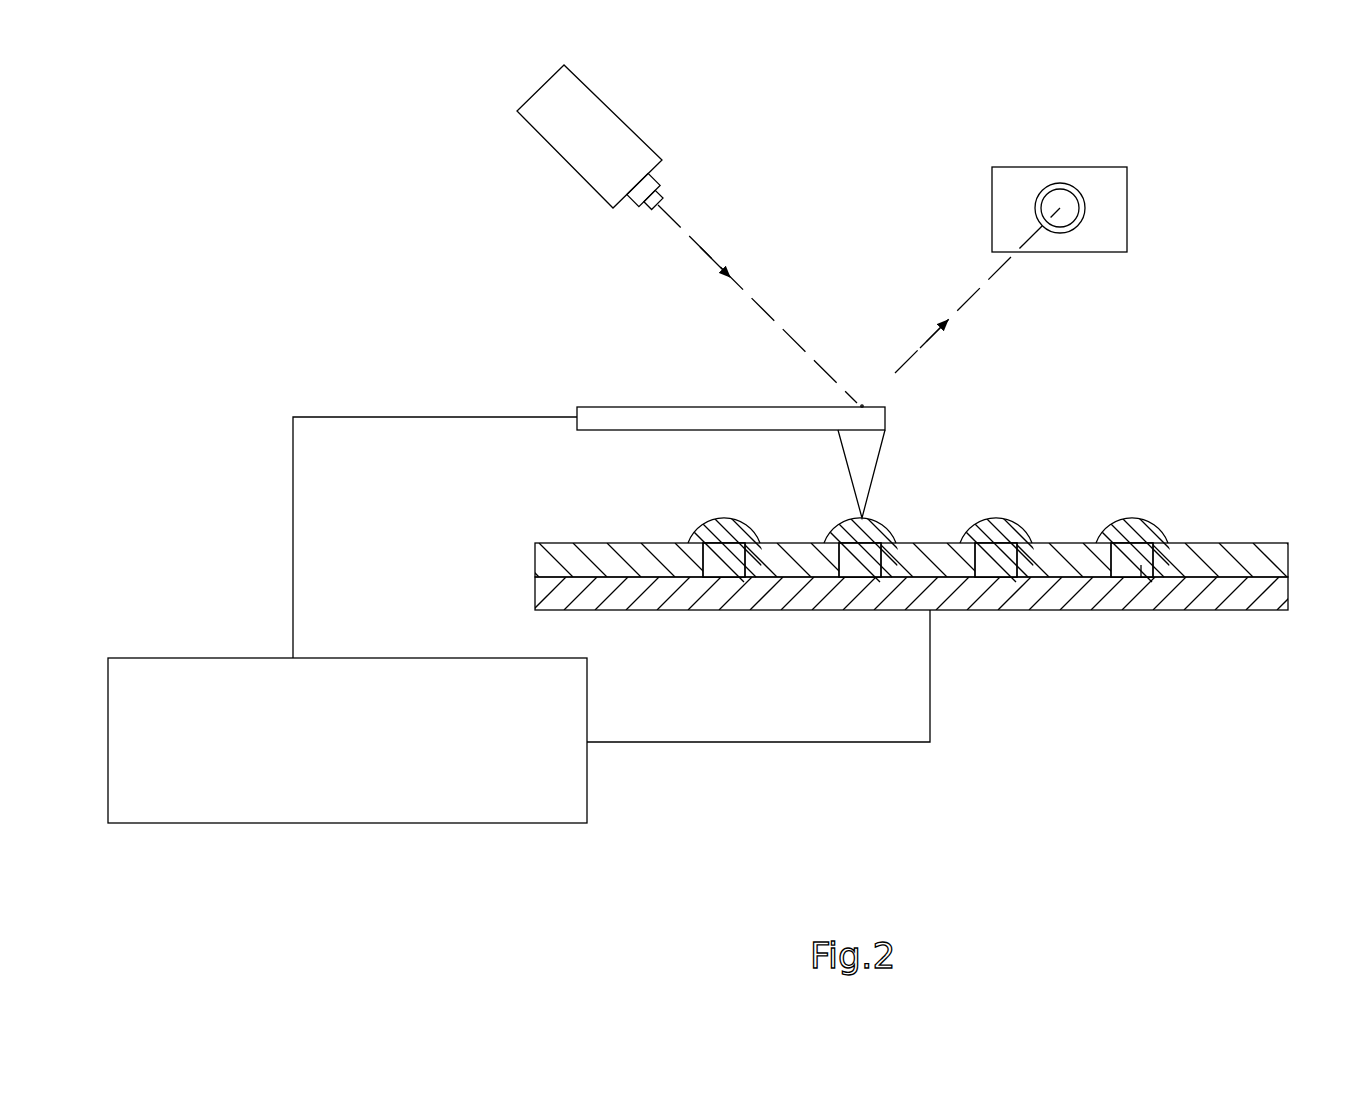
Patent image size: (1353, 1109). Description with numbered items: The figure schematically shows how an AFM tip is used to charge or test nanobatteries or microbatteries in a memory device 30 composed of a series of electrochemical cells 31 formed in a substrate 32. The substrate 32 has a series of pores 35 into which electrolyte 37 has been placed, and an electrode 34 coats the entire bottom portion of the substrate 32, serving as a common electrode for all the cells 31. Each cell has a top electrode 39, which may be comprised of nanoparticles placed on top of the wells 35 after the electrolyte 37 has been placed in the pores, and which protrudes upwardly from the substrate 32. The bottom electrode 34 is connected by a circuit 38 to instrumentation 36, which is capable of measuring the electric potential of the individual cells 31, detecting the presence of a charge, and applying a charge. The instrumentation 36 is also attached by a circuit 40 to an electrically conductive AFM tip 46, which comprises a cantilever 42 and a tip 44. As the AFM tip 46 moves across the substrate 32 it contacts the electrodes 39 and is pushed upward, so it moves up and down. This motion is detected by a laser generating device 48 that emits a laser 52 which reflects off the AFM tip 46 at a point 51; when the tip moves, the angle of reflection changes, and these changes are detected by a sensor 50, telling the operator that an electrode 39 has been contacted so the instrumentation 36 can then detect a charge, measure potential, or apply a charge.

The memory device 30 is at (913, 499).
The electrochemical cells 31 is at (848, 520).
The substrate 32 is at (1243, 543).
The electrode 34 is at (1262, 612).
The pores 35 is at (747, 572).
The instrumentation 36 is at (477, 823).
The electrolyte 37 is at (1141, 566).
The circuit 38 is at (838, 745).
The top electrode 39 is at (700, 532).
The circuit 40 is at (293, 487).
The cantilever 42 is at (651, 405).
The tip 44 is at (878, 473).
The AFM tip 46 is at (555, 453).
The laser generating device 48 is at (645, 140).
The sensor 50 is at (1070, 166).
The point 51 is at (861, 405).
The laser 52 is at (748, 296).